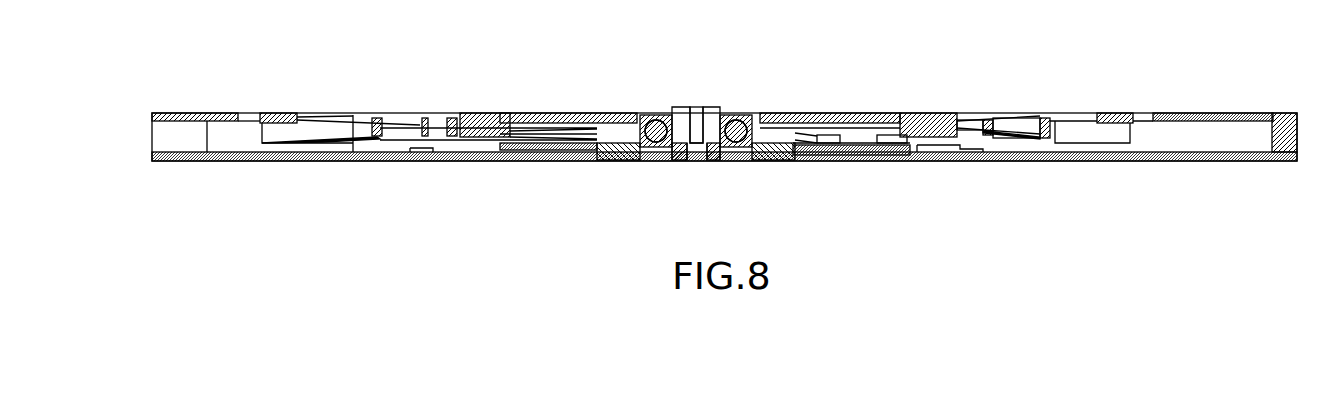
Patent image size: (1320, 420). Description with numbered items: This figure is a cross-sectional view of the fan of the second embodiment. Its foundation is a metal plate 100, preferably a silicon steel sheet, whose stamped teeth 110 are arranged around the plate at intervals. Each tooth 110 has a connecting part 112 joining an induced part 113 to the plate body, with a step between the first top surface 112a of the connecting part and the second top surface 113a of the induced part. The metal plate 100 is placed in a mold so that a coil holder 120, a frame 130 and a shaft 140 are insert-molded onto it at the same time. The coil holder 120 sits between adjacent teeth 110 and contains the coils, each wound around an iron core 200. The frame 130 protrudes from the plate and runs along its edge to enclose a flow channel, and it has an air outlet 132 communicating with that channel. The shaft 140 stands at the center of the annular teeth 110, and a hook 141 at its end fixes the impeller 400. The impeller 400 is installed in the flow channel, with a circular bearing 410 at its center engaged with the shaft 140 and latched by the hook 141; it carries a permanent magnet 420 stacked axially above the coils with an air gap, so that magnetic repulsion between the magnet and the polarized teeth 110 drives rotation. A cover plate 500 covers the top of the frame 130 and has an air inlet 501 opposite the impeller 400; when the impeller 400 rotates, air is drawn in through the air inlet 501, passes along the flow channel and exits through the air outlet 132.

The metal plate 100 is at (1190, 161).
The teeth 110 is at (845, 115).
The connecting part 112 is at (950, 161).
The first top surface 112a is at (952, 117).
The induced part 113 is at (818, 161).
The second top surface 113a is at (808, 115).
The coil holder 120 is at (883, 161).
The frame 130 is at (1290, 113).
The air outlet 132 is at (158, 136).
The shaft 140 is at (711, 98).
The hook 141 is at (716, 113).
The iron core 200 is at (933, 161).
The impeller 400 is at (546, 108).
The circular bearing 410 is at (656, 114).
The permanent magnet 420 is at (913, 113).
The cover plate 500 is at (1188, 113).
The air inlet 501 is at (1152, 113).